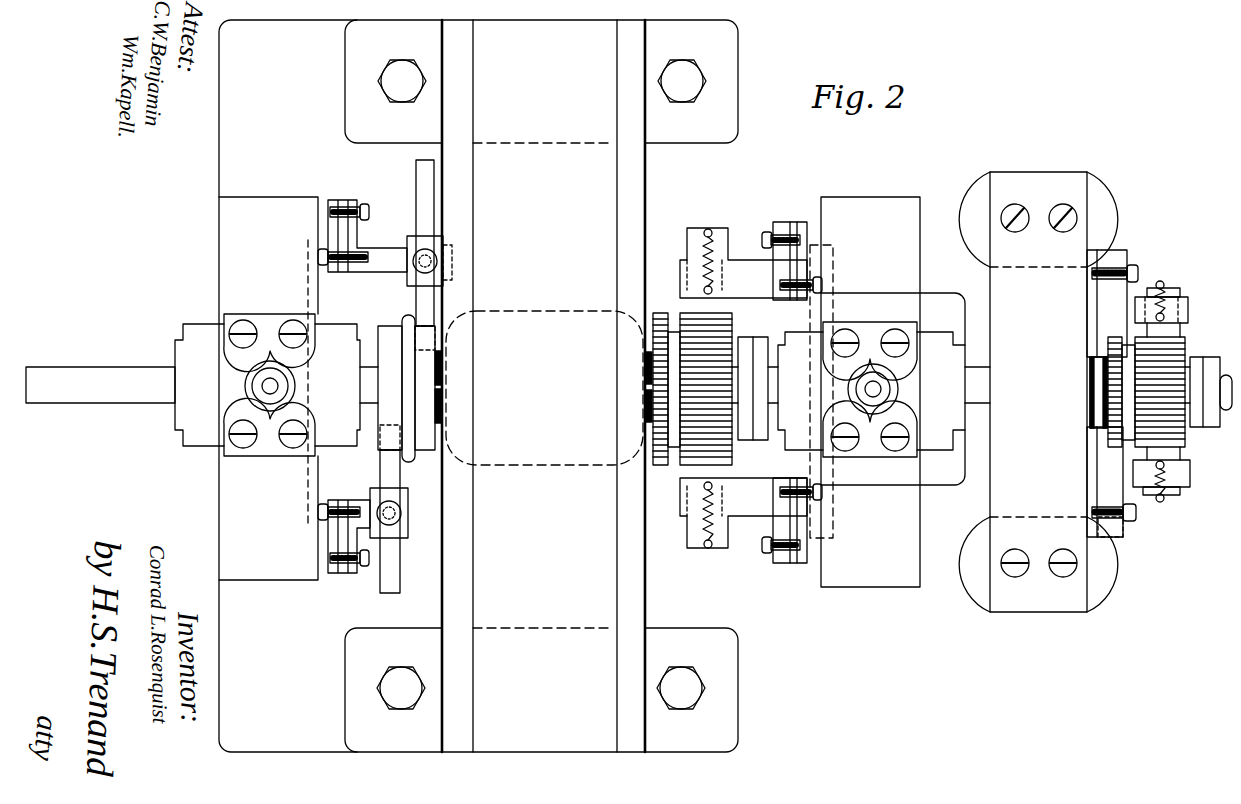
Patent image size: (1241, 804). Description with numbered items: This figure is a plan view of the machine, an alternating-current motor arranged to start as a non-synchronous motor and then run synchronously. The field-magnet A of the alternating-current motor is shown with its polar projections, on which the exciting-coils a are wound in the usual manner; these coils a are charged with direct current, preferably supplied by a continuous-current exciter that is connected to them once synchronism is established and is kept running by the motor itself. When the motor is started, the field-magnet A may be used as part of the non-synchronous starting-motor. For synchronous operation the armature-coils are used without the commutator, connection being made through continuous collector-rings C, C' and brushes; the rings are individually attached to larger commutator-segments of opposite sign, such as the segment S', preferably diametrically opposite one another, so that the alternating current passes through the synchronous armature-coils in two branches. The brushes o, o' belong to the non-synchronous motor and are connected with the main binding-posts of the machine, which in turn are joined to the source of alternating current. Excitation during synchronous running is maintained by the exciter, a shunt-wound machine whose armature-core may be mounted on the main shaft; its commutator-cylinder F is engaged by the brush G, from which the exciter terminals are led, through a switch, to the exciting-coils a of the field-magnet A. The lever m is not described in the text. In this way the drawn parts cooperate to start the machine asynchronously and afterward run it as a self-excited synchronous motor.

The field-magnet A is at (478, 386).
The lever m is at (417, 297).
The collector-ring C is at (390, 388).
The collector-ring C' is at (427, 388).
The commutator-segment S' is at (660, 372).
The brush o is at (742, 438).
The brush o' is at (737, 261).
The brush G is at (1178, 336).
The commutator-cylinder F is at (1182, 439).
The coils a is at (1169, 474).